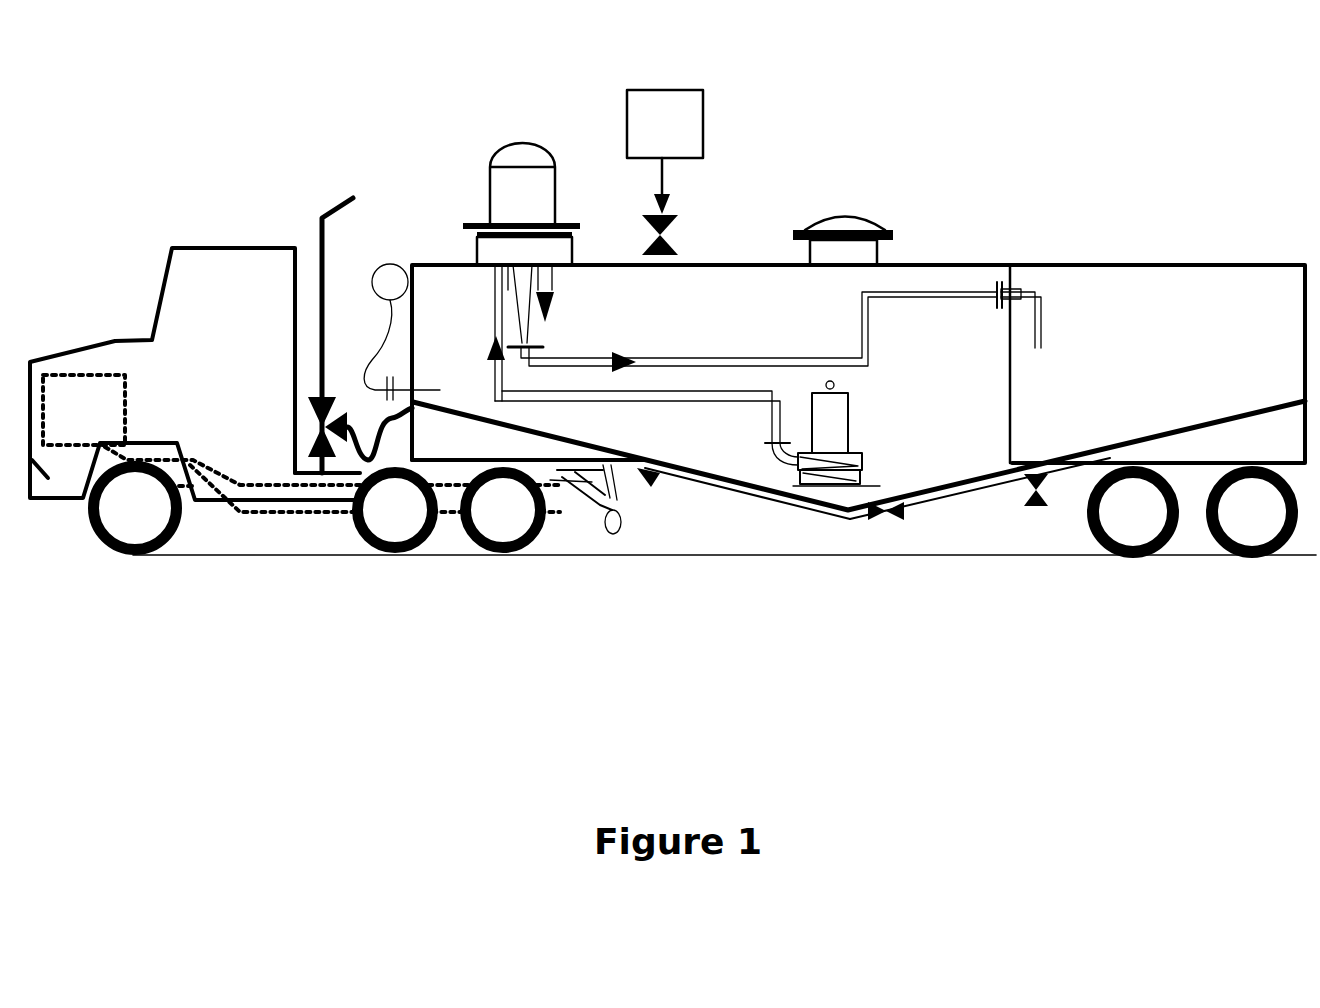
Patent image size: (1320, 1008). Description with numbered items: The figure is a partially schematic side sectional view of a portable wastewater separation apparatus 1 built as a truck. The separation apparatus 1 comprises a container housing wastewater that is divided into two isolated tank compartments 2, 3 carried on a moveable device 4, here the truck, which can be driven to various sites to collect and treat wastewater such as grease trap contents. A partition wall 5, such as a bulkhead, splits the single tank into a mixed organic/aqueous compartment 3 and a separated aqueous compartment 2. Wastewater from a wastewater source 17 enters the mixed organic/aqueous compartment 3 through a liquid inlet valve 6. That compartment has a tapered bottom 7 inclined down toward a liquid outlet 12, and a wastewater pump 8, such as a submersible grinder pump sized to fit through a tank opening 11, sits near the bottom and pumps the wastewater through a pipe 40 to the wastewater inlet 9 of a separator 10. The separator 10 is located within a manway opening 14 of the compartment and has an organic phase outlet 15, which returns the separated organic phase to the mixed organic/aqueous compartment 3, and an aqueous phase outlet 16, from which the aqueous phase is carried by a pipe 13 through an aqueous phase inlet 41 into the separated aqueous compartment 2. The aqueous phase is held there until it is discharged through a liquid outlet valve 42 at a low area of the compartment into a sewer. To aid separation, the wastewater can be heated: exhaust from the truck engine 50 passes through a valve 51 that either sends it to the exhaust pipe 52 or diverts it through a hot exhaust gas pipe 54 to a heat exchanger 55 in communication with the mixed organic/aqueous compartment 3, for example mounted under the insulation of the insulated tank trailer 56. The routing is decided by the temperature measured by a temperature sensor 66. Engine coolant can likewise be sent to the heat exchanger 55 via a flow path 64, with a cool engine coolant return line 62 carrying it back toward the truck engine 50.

The separation apparatus 1 is at (140, 198).
The separated aqueous compartment 2 is at (1161, 398).
The mixed organic/aqueous compartment 3 is at (881, 415).
The moveable device 4 is at (108, 332).
The partition wall 5 is at (987, 388).
The liquid inlet valve 6 is at (677, 201).
The tapered bottom 7 is at (943, 460).
The wastewater pump 8 is at (836, 433).
The wastewater inlet 9 is at (470, 280).
The separator 10 is at (521, 204).
The tank opening 11 is at (843, 200).
The liquid outlet 12 is at (888, 535).
The pipe 13 is at (826, 338).
The manway opening 14 is at (595, 240).
The organic phase outlet 15 is at (562, 284).
The aqueous phase outlet 16 is at (560, 335).
The wastewater source 17 is at (665, 152).
The pipe 40 is at (652, 384).
The aqueous phase inlet 41 is at (1027, 320).
The liquid outlet valve 42 is at (1011, 512).
The truck engine 50 is at (65, 431).
The valve 51 is at (292, 413).
The exhaust pipe 52 is at (336, 191).
The hot exhaust gas pipe 54 is at (360, 420).
The heat exchanger 55 is at (458, 452).
The insulated tank trailer 56 is at (615, 423).
The cool engine coolant return line 62 is at (140, 430).
The flow path 64 is at (237, 523).
The temperature sensor 66 is at (399, 248).